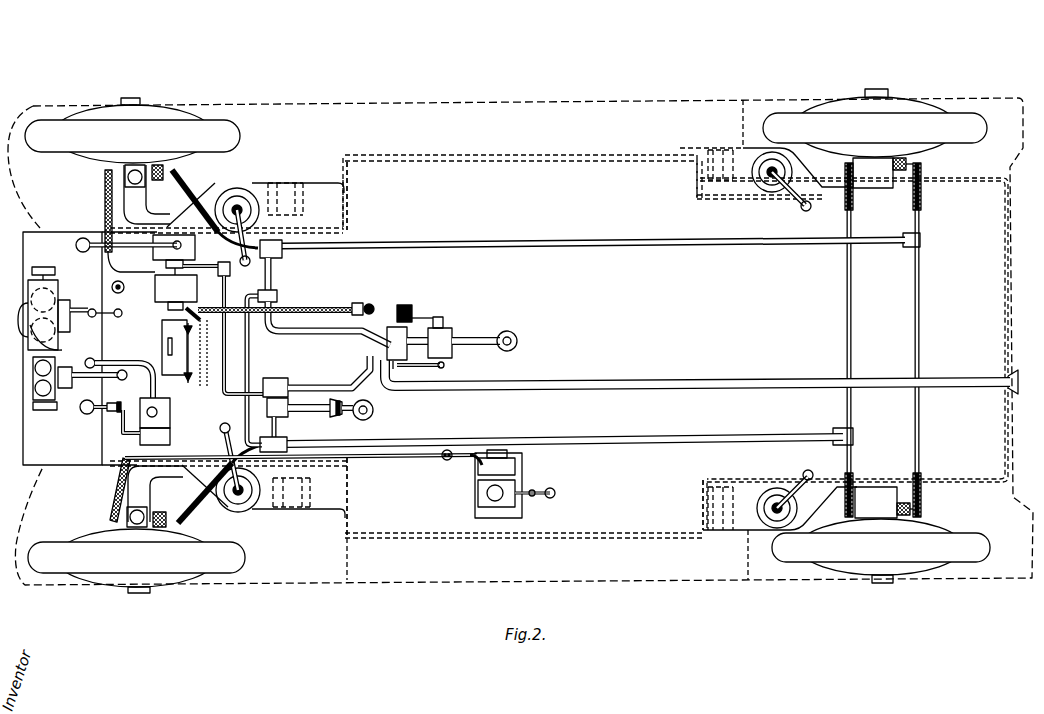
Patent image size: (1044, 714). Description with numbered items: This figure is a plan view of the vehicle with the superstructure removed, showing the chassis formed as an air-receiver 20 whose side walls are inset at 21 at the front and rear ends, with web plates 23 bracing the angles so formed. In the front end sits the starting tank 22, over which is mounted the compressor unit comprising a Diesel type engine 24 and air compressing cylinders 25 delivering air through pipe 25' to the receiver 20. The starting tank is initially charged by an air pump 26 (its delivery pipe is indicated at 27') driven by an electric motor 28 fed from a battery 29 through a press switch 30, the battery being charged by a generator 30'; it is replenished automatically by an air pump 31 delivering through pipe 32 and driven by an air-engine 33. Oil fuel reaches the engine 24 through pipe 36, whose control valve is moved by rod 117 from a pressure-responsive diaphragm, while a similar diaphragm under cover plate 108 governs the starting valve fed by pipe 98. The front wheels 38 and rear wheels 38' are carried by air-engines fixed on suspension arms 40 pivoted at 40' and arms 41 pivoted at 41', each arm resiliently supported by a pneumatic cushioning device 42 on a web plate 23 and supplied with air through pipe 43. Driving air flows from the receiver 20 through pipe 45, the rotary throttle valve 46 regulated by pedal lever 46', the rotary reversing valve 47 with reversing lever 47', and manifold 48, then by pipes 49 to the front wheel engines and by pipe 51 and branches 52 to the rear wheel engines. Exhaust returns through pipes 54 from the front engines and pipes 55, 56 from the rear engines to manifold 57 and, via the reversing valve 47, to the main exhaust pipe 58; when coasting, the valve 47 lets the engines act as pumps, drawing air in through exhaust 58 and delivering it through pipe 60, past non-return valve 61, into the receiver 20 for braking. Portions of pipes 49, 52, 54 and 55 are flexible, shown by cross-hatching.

The air-receiver 20 is at (536, 156).
The inset side walls 21 is at (345, 209).
The starting tank 22 is at (90, 348).
The web plates 23 is at (331, 181).
The Diesel type engine 24 is at (52, 285).
The air compressing cylinders 25 is at (52, 396).
The pipe 25' is at (99, 383).
The air pump 26 is at (196, 245).
The control rod 27' is at (128, 252).
The electric motor 28 is at (152, 281).
The battery 29 is at (200, 332).
The press switch 30 is at (303, 375).
The generator 30' is at (517, 484).
The air pump 31 is at (167, 407).
The pipe 32 is at (145, 362).
The air-engine 33 is at (167, 433).
The pipe 36 is at (56, 344).
The front wheels 38 is at (135, 348).
The rear wheels 38' is at (876, 337).
The front suspension arms 40 is at (176, 346).
The pivots of front arms 40' is at (289, 343).
The rear suspension arms 41 is at (883, 338).
The pivots of rear arms 41' is at (704, 336).
The pneumatic cushioning device 42 is at (231, 196).
The pipe 43 is at (225, 428).
The pipe 45 is at (497, 336).
The rotary throttle valve 46 is at (446, 329).
The pedal lever 46' is at (421, 306).
The rotary reversing valve 47 is at (372, 348).
The reversing lever 47' is at (436, 367).
The manifold 48 is at (318, 334).
The pipes 49 is at (188, 190).
The pipe 51 is at (518, 247).
The branches 52 is at (921, 217).
The exhaust pipes 54 is at (104, 203).
The exhaust pipes 55 is at (855, 317).
The exhaust pipe 56 is at (674, 445).
The manifold 57 is at (312, 387).
The main exhaust pipe 58 is at (660, 388).
The pipe 60 is at (310, 414).
The non-return valve 61 is at (360, 420).
The pipe 98 is at (68, 303).
The cover plate 108 is at (122, 313).
The rod 117 is at (122, 290).